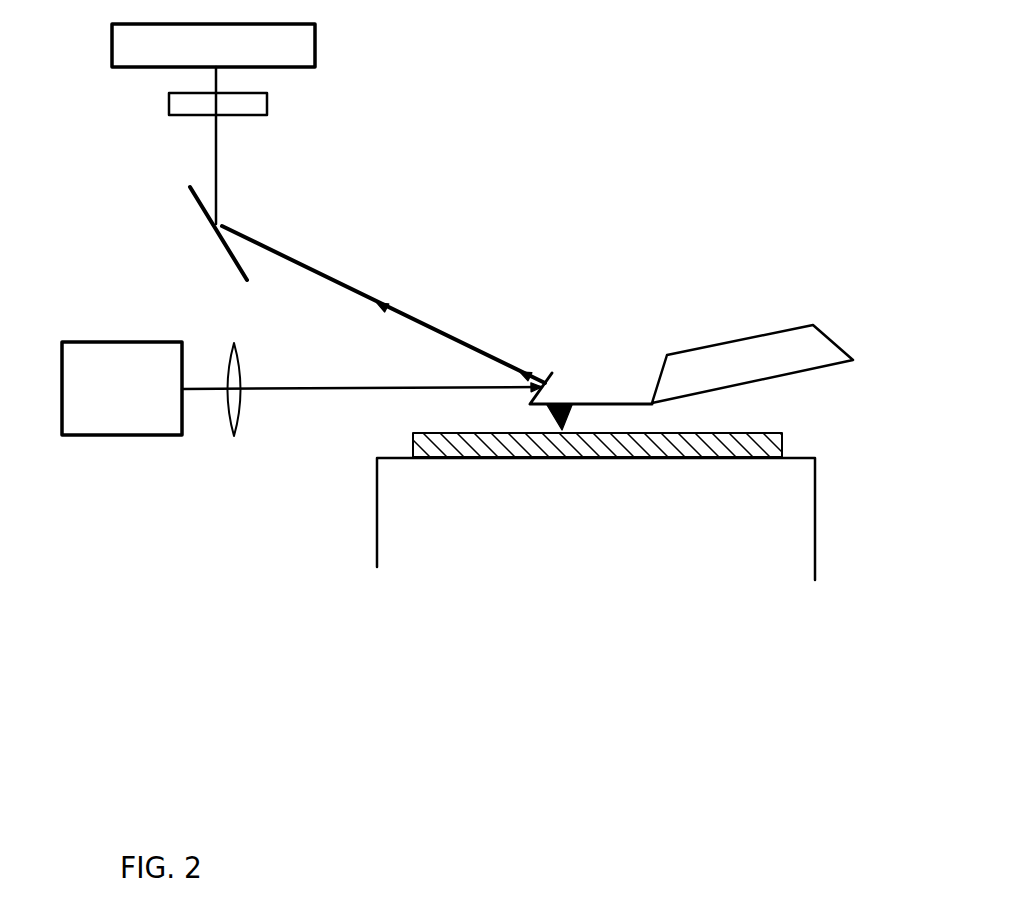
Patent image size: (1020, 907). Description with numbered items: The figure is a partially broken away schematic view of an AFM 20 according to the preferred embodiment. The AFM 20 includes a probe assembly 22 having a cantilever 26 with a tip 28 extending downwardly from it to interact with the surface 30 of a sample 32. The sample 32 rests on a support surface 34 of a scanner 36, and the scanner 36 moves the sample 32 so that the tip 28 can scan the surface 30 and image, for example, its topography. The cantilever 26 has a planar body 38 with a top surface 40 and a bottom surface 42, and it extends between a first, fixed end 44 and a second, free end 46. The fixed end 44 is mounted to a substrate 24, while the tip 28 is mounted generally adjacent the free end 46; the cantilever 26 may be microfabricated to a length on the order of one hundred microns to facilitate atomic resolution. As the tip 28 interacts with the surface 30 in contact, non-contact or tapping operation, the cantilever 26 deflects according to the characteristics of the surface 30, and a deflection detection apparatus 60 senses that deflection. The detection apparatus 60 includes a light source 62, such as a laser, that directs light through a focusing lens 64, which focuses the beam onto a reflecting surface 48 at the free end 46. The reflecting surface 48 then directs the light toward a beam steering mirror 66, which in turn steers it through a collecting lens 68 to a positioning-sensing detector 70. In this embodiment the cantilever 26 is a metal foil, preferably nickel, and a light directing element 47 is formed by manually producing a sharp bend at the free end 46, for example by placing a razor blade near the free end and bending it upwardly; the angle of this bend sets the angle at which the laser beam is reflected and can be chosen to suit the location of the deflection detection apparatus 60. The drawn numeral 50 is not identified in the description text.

The AFM 20 is at (676, 230).
The probe assembly 22 is at (715, 305).
The substrate 24 is at (817, 348).
The cantilever 26 is at (564, 390).
The tip 28 is at (567, 415).
The surface 30 is at (728, 432).
The sample 32 is at (769, 441).
The support surface 34 is at (797, 455).
The scanner 36 is at (788, 512).
The planar body 38 is at (578, 400).
The top surface 40 is at (600, 401).
The bottom surface 42 is at (618, 405).
The fixed end 44 is at (646, 398).
The free end 46 is at (526, 414).
The light directing element 47 is at (504, 353).
The reflecting surface 48 is at (547, 378).
The reflective spot 50 is at (562, 391).
The deflection detection apparatus 60 is at (326, 195).
The light source 62 is at (97, 342).
The focusing lens 64 is at (243, 361).
The beam steering mirror 66 is at (193, 198).
The collecting lens 68 is at (267, 105).
The positioning-sensing detector 70 is at (316, 42).